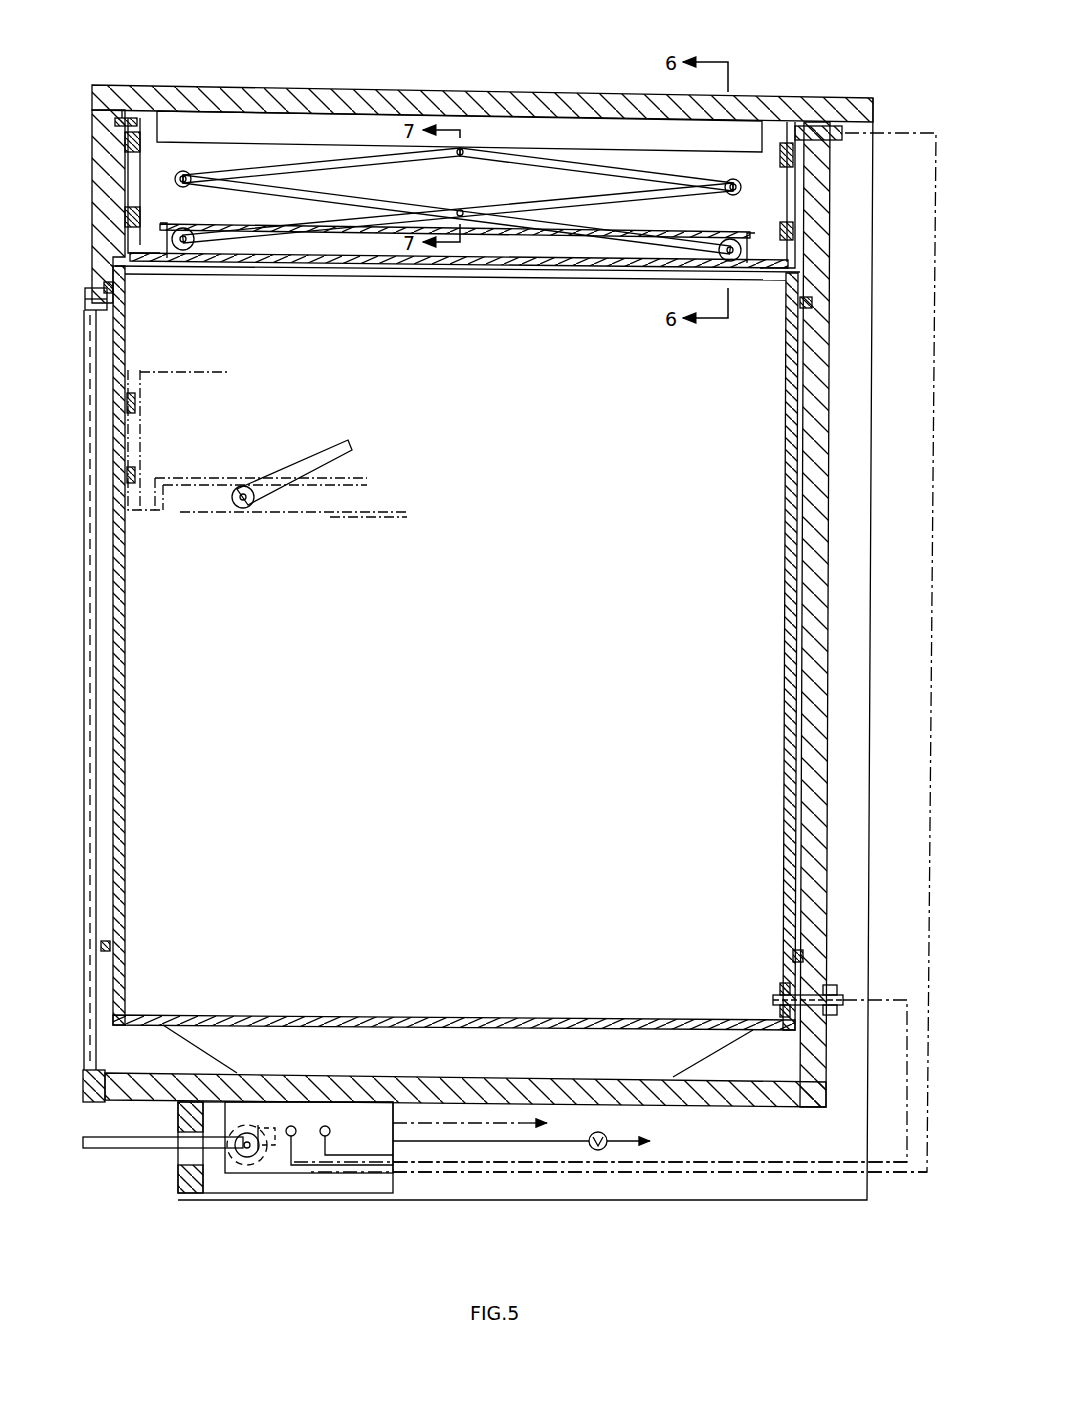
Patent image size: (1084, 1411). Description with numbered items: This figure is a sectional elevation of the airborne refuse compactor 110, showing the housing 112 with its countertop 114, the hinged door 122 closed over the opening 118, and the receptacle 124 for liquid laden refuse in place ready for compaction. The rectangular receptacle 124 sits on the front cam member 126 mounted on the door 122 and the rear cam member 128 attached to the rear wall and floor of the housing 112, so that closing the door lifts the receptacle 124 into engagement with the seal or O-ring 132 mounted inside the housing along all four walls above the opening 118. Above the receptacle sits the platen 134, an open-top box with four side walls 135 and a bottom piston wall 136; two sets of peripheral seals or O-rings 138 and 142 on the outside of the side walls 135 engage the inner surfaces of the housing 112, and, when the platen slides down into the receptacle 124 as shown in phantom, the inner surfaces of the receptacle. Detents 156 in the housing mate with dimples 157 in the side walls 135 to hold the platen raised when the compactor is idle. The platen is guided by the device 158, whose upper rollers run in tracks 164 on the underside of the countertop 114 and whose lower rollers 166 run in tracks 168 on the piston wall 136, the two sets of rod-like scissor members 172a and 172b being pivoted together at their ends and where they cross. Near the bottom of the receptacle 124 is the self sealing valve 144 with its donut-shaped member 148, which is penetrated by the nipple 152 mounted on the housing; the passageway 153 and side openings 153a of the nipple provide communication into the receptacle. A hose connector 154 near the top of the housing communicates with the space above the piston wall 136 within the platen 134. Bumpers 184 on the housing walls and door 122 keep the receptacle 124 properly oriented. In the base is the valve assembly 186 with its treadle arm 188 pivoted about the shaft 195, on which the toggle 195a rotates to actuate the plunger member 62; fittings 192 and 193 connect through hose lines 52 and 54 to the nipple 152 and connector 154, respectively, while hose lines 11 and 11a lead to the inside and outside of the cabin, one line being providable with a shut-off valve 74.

The hose line 11 is at (505, 1122).
The hose line 11a is at (575, 1140).
The hose line 52 is at (668, 1164).
The hose line 54 is at (730, 1174).
The plunger member 62 is at (275, 1128).
The shut-off valve 74 is at (598, 1151).
The airborne refuse compactor 110 is at (468, 771).
The housing 112 is at (92, 195).
The countertop 114 is at (483, 97).
The opening 118 is at (108, 297).
The hinged door 122 is at (83, 1060).
The receptacle 124 is at (125, 720).
The front cam member 126 is at (222, 1058).
The rear cam member 128 is at (700, 1058).
The seal or O-ring 132 is at (113, 289).
The platen 134 is at (800, 205).
The side walls 135 is at (140, 160).
The bottom piston wall 136 is at (490, 262).
The peripheral seal or O-ring 138 is at (124, 138).
The peripheral seal or O-ring 142 is at (140, 218).
The self sealing valve 144 is at (780, 1008).
The donut-shaped member 148 is at (780, 988).
The nipple 152 is at (838, 1012).
The passageway 153 is at (793, 1015).
The side openings 153a is at (843, 998).
The hose connector 154 is at (846, 133).
The detents 156 is at (122, 117).
The dimples 157 is at (137, 120).
The device 158 is at (597, 240).
The tracks 164 is at (245, 140).
The rollers 166 is at (178, 250).
The tracks 168 is at (727, 236).
The scissor members 172a is at (388, 196).
The scissor members 172b is at (613, 192).
The bumpers 184 is at (110, 947).
The valve assembly 186 is at (390, 1175).
The treadle arm 188 is at (150, 1148).
The fitting 192 is at (325, 1137).
The fitting 193 is at (291, 1137).
The shaft 195 is at (245, 1150).
The toggle 195a is at (264, 1165).